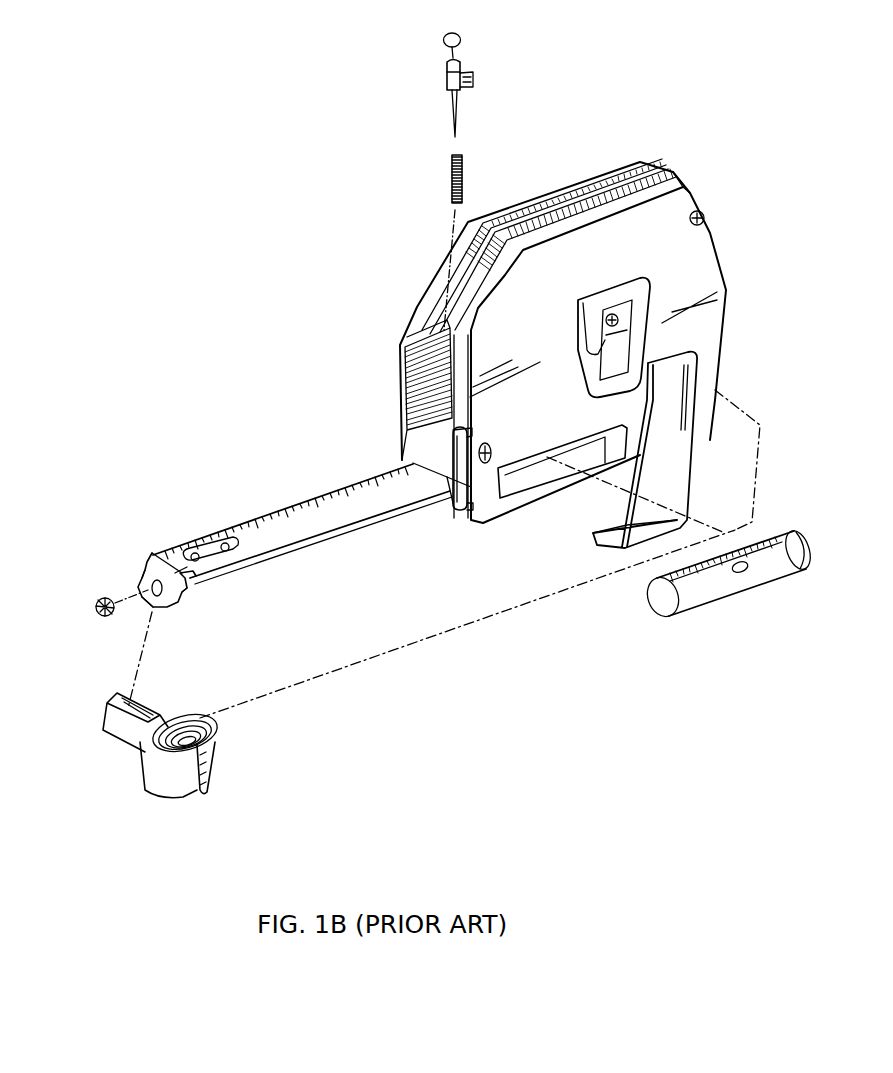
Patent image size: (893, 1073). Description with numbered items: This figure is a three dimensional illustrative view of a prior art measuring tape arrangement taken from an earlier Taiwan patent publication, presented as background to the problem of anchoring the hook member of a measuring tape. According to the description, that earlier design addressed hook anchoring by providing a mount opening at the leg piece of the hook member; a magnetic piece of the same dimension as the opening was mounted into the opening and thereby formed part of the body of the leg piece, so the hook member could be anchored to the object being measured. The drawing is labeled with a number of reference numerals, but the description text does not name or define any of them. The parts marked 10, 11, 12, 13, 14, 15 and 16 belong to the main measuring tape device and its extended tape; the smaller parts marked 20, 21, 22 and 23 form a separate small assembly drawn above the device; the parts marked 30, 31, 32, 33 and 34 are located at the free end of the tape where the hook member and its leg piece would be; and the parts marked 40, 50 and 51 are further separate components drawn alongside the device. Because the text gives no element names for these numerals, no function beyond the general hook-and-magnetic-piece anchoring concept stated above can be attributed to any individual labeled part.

The tape measure housing 10 is at (708, 243).
The tape outlet 11 is at (447, 503).
The slide lock button 12 is at (458, 511).
The tape edge 13 is at (445, 493).
The slot 14 is at (547, 480).
The base bracket 15 is at (670, 395).
The measuring tape 16 is at (268, 545).
The pin holder 20 is at (473, 78).
The pin 21 is at (462, 113).
The spring 22 is at (468, 180).
The cap 23 is at (463, 35).
The end hook 30 is at (153, 553).
The hole 31 is at (160, 596).
The side tab 32 is at (142, 575).
The bend 33 is at (150, 608).
The screw 34 is at (93, 610).
The wing nut 40 is at (147, 760).
The marking pen 50 is at (713, 603).
The hole 51 is at (747, 567).